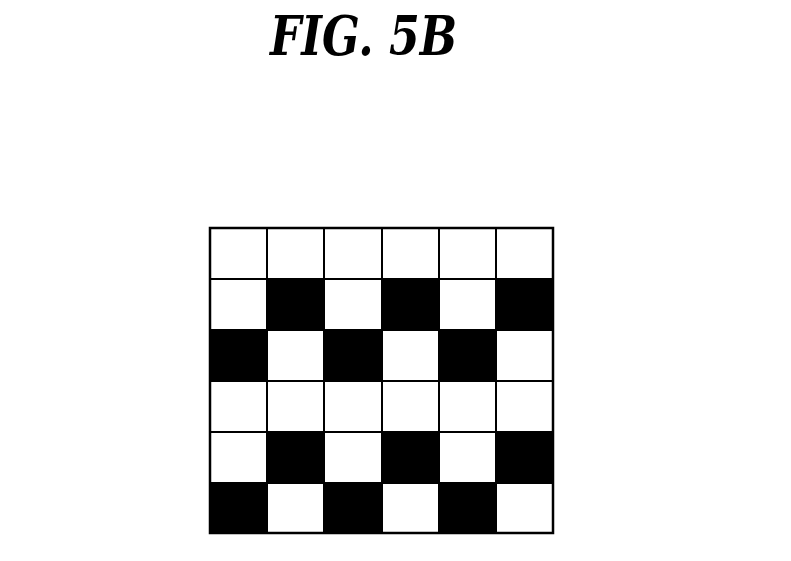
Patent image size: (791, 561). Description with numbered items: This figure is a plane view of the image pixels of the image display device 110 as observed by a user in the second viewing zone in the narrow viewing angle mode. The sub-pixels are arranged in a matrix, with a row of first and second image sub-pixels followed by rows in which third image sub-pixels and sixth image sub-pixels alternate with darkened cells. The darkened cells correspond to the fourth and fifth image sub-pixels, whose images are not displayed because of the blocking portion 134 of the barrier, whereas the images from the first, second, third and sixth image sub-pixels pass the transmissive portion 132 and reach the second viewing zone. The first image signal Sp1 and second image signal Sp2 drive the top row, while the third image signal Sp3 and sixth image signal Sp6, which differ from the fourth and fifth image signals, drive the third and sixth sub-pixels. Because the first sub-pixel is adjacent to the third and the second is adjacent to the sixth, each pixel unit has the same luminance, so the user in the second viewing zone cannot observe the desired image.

The image display device 110 is at (610, 260).
The transmissive portion 132 is at (198, 289).
The blocking portion 134 is at (208, 343).
The first image signal Sp1 is at (233, 212).
The second image signal Sp2 is at (298, 212).
The third image signal Sp3 is at (372, 275).
The sixth image signal Sp6 is at (272, 375).